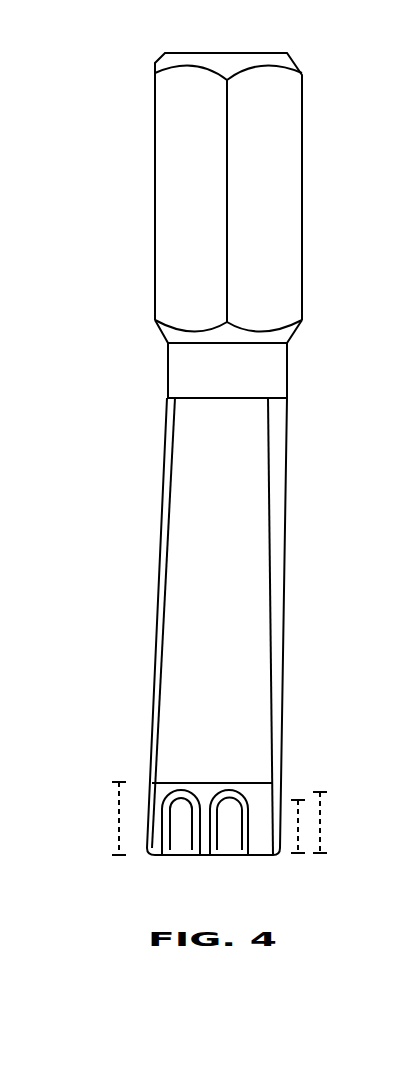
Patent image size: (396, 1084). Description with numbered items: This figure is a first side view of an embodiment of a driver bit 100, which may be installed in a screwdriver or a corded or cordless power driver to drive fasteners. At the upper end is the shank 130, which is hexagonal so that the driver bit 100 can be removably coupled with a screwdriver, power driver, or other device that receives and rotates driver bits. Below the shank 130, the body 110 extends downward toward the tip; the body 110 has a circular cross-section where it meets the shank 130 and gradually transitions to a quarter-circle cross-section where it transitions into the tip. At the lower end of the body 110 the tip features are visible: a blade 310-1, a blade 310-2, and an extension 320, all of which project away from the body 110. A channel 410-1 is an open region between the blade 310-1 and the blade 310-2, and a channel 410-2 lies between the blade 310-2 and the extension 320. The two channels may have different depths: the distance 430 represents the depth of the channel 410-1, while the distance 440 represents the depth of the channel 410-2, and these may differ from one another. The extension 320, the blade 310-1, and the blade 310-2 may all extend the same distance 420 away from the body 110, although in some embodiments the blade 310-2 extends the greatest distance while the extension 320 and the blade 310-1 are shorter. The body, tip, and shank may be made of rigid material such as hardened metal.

The driver bit 100 is at (331, 113).
The shank 130 is at (301, 250).
The body 110 is at (233, 698).
The blade 310-1 is at (157, 800).
The blade 310-2 is at (205, 797).
The channel 410-1 is at (181, 828).
The channel 410-2 is at (233, 828).
The extension 320 is at (260, 840).
The distance 420 is at (118, 800).
The distance 430 is at (299, 798).
The distance 440 is at (322, 820).